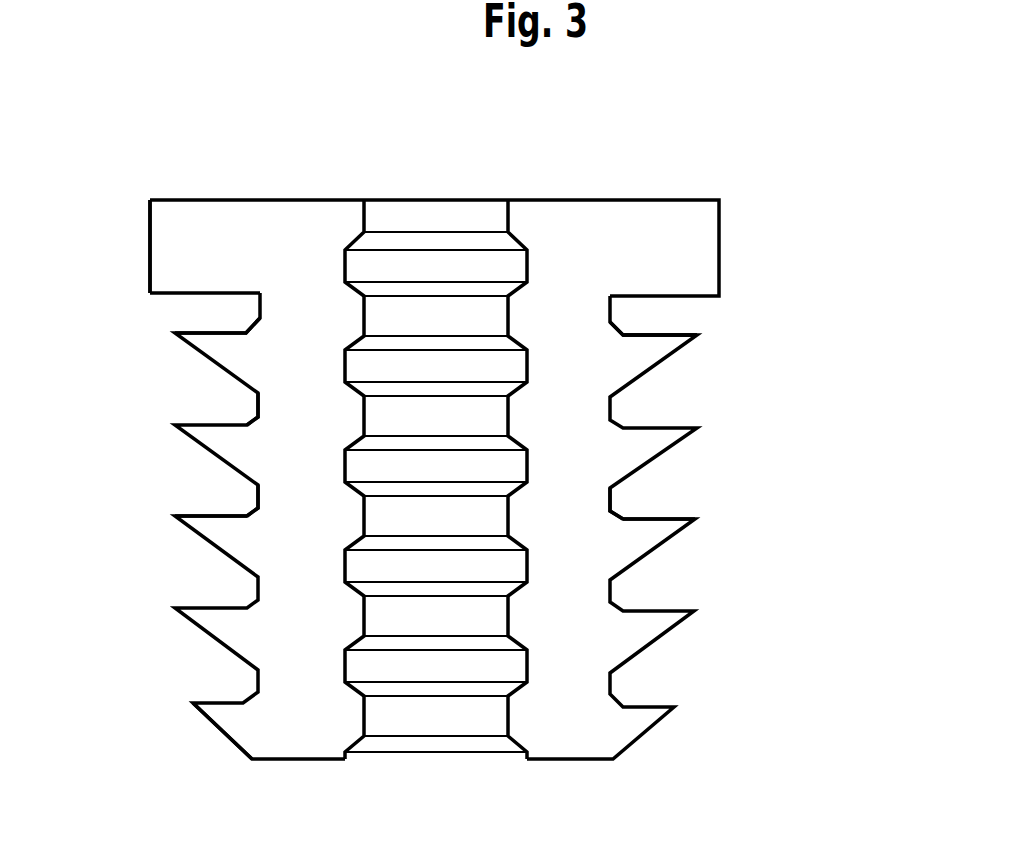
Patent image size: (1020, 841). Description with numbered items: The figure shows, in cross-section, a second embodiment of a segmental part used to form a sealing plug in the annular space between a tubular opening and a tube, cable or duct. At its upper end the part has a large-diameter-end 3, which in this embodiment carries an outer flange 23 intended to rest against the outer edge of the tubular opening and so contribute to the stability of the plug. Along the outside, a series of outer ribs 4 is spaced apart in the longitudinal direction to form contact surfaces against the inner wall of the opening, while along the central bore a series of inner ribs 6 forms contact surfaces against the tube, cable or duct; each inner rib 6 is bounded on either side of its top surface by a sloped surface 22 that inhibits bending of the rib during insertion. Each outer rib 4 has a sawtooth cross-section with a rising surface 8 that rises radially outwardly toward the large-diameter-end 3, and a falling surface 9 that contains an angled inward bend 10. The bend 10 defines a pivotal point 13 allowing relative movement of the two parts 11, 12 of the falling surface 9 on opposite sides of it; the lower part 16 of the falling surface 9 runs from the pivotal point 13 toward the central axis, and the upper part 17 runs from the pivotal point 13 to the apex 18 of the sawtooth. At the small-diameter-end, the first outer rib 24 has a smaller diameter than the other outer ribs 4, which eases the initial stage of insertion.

The large-diameter-end 3 is at (268, 199).
The outer flange 23 is at (141, 229).
The sloped surface 22 is at (367, 282).
The inner rib 6 is at (362, 318).
The outer rib 4 is at (218, 347).
The pivotal point 13 is at (238, 334).
The angled inward bend 10 is at (242, 417).
The part of the falling surface 12 is at (252, 505).
The part of the falling surface 11 is at (210, 515).
The first outer rib 24 is at (229, 721).
The falling surface 9 is at (664, 329).
The apex 18 is at (698, 336).
The rising surface 8 is at (656, 379).
The lower part of the falling surface 16 is at (615, 510).
The upper part of the falling surface 17 is at (677, 518).